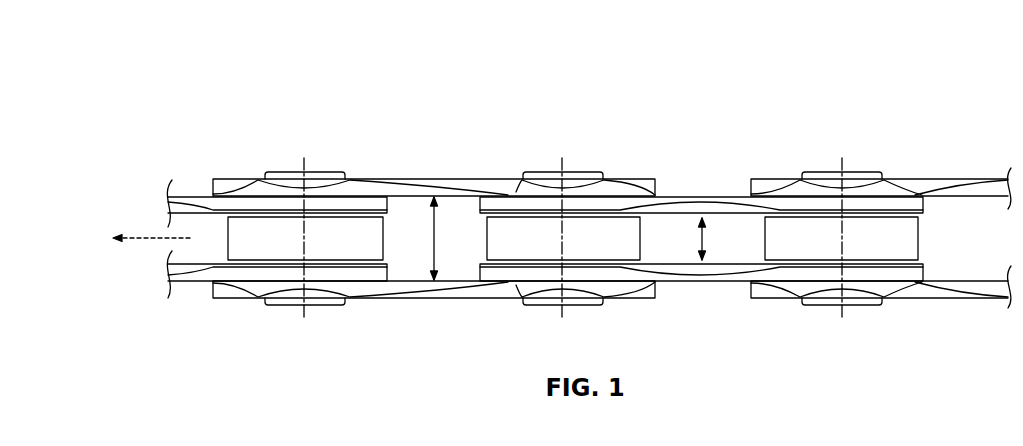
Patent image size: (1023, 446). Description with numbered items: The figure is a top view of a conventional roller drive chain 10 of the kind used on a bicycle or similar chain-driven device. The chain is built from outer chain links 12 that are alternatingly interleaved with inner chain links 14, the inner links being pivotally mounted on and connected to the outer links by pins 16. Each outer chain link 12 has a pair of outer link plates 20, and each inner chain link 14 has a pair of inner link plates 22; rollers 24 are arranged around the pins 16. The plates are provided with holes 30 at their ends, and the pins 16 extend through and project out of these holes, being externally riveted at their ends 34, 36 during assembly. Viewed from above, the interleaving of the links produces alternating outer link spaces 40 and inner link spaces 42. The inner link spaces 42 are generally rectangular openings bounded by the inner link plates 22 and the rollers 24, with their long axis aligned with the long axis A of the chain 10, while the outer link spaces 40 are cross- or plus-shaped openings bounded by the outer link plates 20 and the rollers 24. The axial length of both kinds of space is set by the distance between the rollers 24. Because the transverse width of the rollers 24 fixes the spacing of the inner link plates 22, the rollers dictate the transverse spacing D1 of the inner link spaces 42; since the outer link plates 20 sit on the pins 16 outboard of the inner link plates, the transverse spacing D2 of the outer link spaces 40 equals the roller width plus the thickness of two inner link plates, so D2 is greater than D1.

The roller drive chain 10 is at (775, 98).
The outer chain link 12 is at (427, 320).
The inner chain link 14 is at (685, 303).
The pin 16 is at (567, 168).
The outer link plate 20 is at (492, 185).
The inner link plate 22 is at (737, 197).
The roller 24 is at (263, 248).
The hole 30 is at (350, 179).
The pin end 34 is at (597, 184).
The pin end 36 is at (520, 300).
The outer link space 40 is at (409, 220).
The inner link space 42 is at (667, 227).
The transverse spacing of the inner link spaces D1 is at (705, 240).
The transverse spacing of the outer link spaces D2 is at (435, 237).
The long axis of the chain A is at (150, 238).